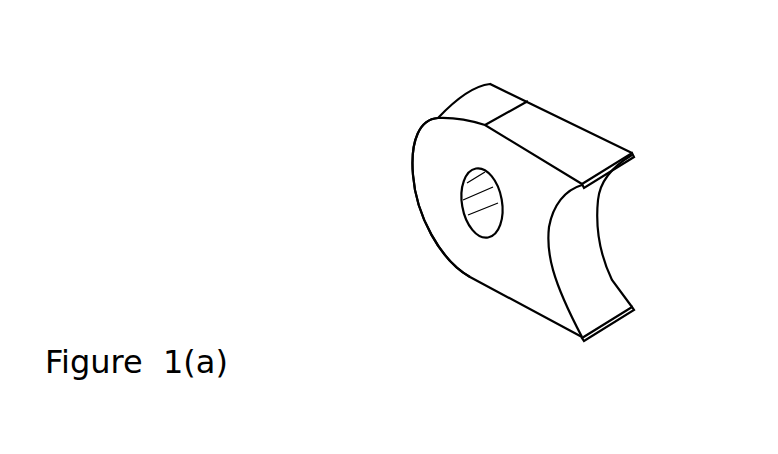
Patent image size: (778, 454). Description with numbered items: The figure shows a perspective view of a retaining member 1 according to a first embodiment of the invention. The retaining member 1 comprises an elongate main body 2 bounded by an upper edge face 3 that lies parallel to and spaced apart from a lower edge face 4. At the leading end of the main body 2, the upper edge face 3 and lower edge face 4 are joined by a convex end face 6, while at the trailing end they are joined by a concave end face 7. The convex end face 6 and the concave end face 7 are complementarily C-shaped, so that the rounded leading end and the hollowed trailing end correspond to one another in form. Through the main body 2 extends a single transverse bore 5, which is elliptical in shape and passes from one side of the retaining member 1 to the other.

The retaining member 1 is at (503, 206).
The elongate main body 2 is at (498, 258).
The upper edge face 3 is at (573, 140).
The lower edge face 4 is at (518, 308).
The transverse bore 5 is at (463, 205).
The convex end face 6 is at (407, 157).
The concave end face 7 is at (580, 242).